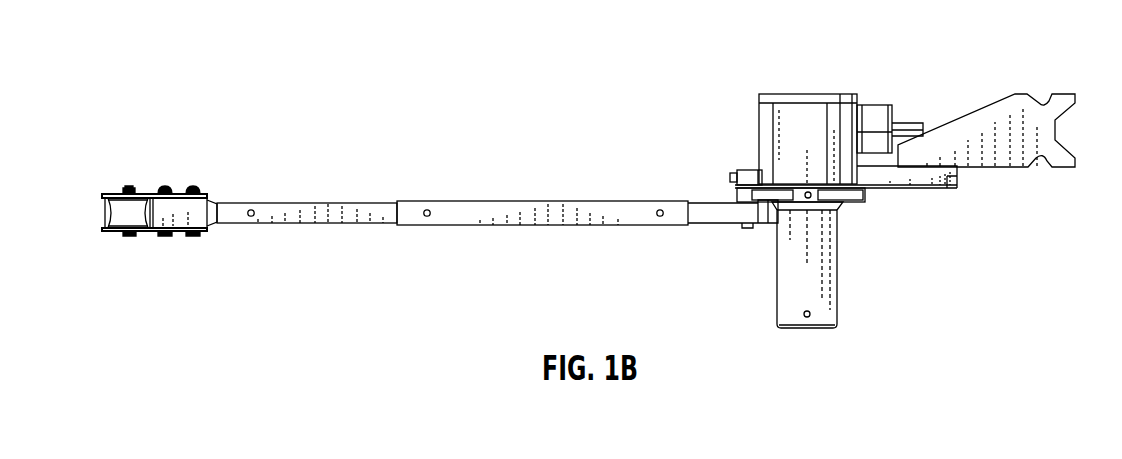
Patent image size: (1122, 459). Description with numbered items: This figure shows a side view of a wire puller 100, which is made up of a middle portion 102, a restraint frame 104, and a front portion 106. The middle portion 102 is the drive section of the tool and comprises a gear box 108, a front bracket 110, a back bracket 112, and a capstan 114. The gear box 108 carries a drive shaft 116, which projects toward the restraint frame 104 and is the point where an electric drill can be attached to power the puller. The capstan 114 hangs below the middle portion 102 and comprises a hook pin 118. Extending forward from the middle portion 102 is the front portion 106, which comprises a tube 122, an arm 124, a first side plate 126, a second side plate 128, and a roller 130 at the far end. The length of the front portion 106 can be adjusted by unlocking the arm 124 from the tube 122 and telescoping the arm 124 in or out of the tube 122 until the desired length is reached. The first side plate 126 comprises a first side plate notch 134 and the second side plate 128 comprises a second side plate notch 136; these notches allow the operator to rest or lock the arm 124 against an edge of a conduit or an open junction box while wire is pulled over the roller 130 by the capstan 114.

The wire puller 100 is at (511, 125).
The middle portion 102 is at (700, 113).
The restraint frame 104 is at (1013, 155).
The front portion 106 is at (298, 150).
The gear box 108 is at (817, 92).
The front bracket 110 is at (748, 175).
The back bracket 112 is at (937, 186).
The capstan 114 is at (816, 286).
The drive shaft 116 is at (910, 123).
The hook pin 118 is at (835, 203).
The tube 122 is at (456, 212).
The arm 124 is at (272, 224).
The first side plate 126 is at (165, 237).
The second side plate 128 is at (155, 195).
The roller 130 is at (122, 217).
The first side plate notch 134 is at (122, 237).
The second side plate notch 136 is at (148, 167).